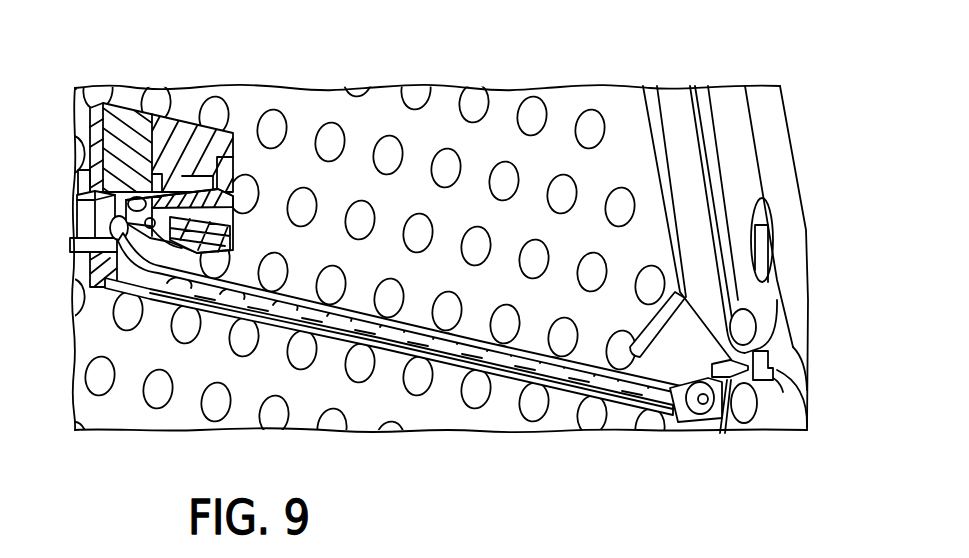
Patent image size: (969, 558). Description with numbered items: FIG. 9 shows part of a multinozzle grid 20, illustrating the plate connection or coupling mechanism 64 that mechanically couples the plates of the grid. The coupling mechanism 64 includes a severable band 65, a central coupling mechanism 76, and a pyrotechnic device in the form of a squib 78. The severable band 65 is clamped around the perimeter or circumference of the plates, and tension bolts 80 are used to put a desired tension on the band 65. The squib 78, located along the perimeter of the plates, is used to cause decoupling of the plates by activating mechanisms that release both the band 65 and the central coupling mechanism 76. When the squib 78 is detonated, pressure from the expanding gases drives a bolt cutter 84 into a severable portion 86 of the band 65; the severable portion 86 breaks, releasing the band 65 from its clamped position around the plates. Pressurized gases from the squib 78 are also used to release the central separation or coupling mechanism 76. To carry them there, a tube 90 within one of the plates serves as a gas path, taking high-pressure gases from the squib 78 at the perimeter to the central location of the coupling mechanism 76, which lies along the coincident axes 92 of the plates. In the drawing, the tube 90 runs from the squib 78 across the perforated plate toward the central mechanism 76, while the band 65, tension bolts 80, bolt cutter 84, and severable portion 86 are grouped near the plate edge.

The rack system 20 is at (77, 72).
The plate connection or coupling mechanism 64 is at (220, 72).
The severable band 65 is at (740, 155).
The central coupling mechanism 76 is at (100, 180).
The squib 78 is at (702, 402).
The tension bolts 80 is at (743, 328).
The bolt cutter 84 is at (731, 380).
The severable portion 86 is at (758, 363).
The tube 90 is at (525, 358).
The coincident axes 92 is at (105, 232).